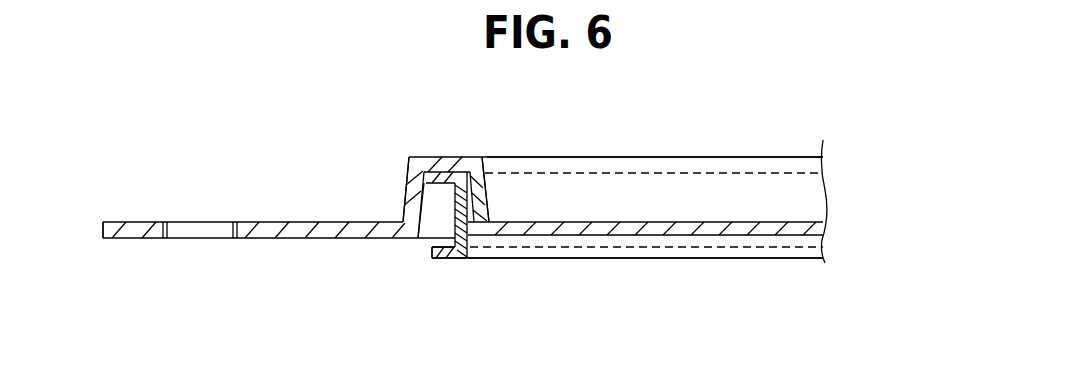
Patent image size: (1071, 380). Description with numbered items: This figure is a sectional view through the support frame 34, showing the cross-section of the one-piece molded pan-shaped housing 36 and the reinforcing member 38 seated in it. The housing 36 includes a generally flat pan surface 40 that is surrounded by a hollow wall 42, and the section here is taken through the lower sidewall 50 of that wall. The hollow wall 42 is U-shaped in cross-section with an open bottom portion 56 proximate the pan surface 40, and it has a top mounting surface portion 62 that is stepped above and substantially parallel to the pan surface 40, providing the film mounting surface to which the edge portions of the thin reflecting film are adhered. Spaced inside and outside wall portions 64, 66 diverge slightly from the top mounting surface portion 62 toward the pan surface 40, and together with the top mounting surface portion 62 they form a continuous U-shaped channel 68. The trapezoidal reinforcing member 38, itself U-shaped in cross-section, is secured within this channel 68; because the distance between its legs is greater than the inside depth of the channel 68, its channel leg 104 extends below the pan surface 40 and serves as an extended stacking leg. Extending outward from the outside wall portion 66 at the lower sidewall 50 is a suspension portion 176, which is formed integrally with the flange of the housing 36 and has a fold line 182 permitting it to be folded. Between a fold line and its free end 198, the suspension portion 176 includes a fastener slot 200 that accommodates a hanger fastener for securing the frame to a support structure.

The support frame 34 is at (325, 82).
The pan-shaped housing 36 is at (732, 146).
The reinforcing member 38 is at (573, 259).
The pan surface 40 is at (654, 222).
The hollow wall 42 is at (829, 198).
The lower sidewall 50 is at (432, 157).
The open bottom portion 56 is at (433, 247).
The top mounting surface portion 62 is at (462, 158).
The inside wall portion 64 is at (486, 204).
The outside wall portion 66 is at (406, 159).
The U-shaped channel 68 is at (427, 221).
The channel leg 104 is at (443, 259).
The suspension portion 176 is at (141, 221).
The fold line 182 is at (402, 215).
The free end 198 is at (103, 231).
The fastener slot 200 is at (200, 239).